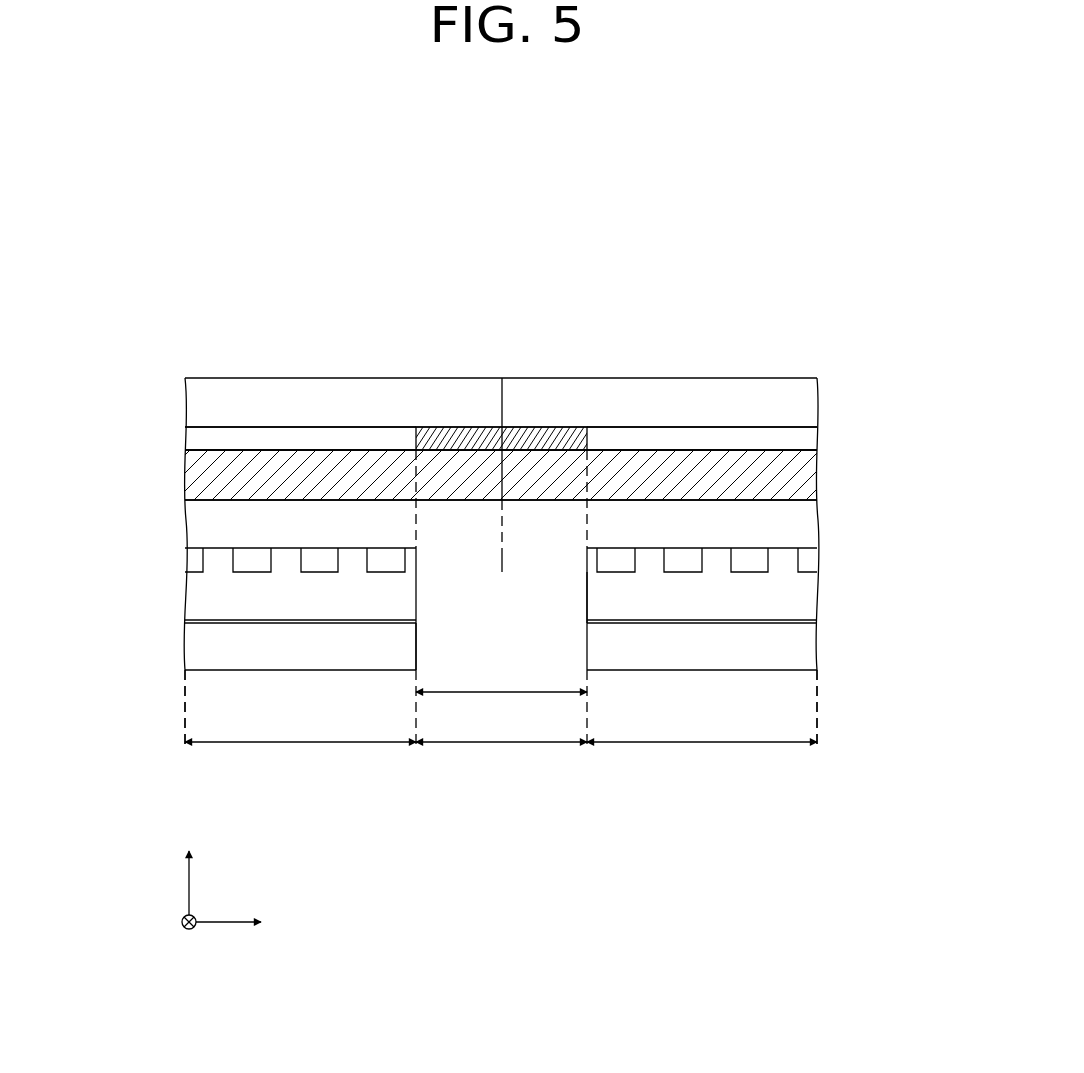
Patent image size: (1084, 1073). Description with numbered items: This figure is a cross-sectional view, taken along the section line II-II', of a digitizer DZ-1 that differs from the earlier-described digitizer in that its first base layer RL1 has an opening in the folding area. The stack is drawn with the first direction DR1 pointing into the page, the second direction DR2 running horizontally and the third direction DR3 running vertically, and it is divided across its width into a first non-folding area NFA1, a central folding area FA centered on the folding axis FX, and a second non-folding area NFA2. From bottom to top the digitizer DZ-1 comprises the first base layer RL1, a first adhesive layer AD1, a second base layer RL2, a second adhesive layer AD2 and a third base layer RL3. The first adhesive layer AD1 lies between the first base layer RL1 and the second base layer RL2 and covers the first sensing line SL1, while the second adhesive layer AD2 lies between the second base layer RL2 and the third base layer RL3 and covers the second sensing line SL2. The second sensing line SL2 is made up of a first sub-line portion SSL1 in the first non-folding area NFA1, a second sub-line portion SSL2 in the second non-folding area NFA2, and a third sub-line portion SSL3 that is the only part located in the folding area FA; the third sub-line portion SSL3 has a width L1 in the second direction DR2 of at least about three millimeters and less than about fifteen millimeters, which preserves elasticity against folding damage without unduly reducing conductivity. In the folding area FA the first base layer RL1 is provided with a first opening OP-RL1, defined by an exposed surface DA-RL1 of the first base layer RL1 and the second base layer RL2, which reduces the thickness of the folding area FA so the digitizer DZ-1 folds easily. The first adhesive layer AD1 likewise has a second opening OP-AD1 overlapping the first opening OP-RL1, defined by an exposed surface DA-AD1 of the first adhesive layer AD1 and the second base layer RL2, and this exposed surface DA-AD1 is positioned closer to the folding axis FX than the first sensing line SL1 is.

The digitizer DZ-1 is at (836, 308).
The third base layer RL3 is at (812, 401).
The second sensing line SL2 is at (718, 323).
The first sub-line portion SSL1 is at (300, 435).
The third sub-line portion SSL3 is at (468, 435).
The second sub-line portion SSL2 is at (678, 437).
The second adhesive layer AD2 is at (806, 479).
The second base layer RL2 is at (808, 522).
The first sensing line SL1 is at (812, 560).
The first adhesive layer AD1 is at (808, 595).
The exposed surface of the first adhesive layer DA-AD1 is at (578, 604).
The first base layer RL1 is at (805, 650).
The second opening OP-AD1 is at (587, 566).
The first opening OP-RL1 is at (416, 625).
The exposed surface of the first base layer DA-RL1 is at (419, 662).
The folding axis FX is at (502, 492).
The width L1 is at (501, 709).
The first non-folding area NFA1 is at (300, 724).
The folding area FA is at (501, 760).
The second non-folding area NFA2 is at (702, 724).
The section line II-II' II is at (185, 725).
The section line II- II' is at (822, 725).
The first direction DR1 is at (189, 937).
The second direction DR2 is at (251, 922).
The third direction DR3 is at (189, 869).